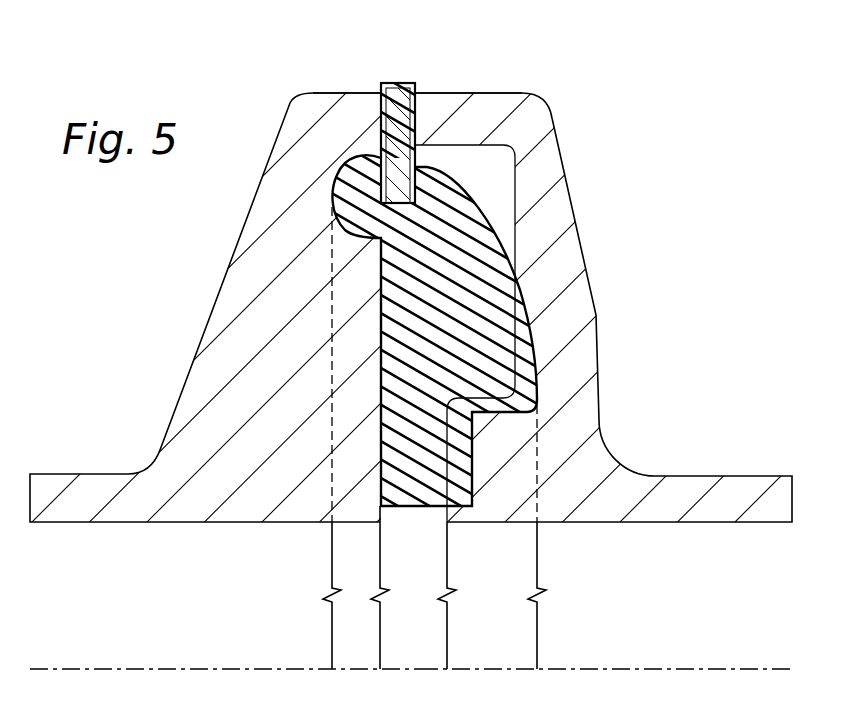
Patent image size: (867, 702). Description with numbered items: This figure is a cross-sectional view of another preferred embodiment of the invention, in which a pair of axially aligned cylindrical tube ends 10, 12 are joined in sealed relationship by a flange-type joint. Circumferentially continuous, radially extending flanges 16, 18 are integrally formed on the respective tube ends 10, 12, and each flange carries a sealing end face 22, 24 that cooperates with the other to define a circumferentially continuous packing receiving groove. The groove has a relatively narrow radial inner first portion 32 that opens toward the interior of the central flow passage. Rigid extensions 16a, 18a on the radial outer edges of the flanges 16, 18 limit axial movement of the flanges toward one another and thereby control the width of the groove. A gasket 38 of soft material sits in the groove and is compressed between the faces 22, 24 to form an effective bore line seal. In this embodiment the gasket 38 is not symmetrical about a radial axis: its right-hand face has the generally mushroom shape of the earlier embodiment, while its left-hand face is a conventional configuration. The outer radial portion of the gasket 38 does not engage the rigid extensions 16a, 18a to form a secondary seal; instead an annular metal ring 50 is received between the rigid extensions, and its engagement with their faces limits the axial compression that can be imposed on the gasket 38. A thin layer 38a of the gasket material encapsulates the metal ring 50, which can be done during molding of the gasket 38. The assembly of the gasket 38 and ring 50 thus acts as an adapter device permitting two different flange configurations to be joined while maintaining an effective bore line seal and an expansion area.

The tube end 10 is at (105, 584).
The tube end 12 is at (715, 576).
The flange 16 is at (258, 250).
The rigid extension 16a is at (333, 128).
The flange 18 is at (570, 258).
The rigid extension 18a is at (477, 110).
The end face 22 is at (383, 432).
The end face 24 is at (430, 443).
The radial inner first portion 32 is at (434, 445).
The gasket 38 is at (527, 363).
The thin layer 38a is at (382, 83).
The annular metal ring 50 is at (398, 120).